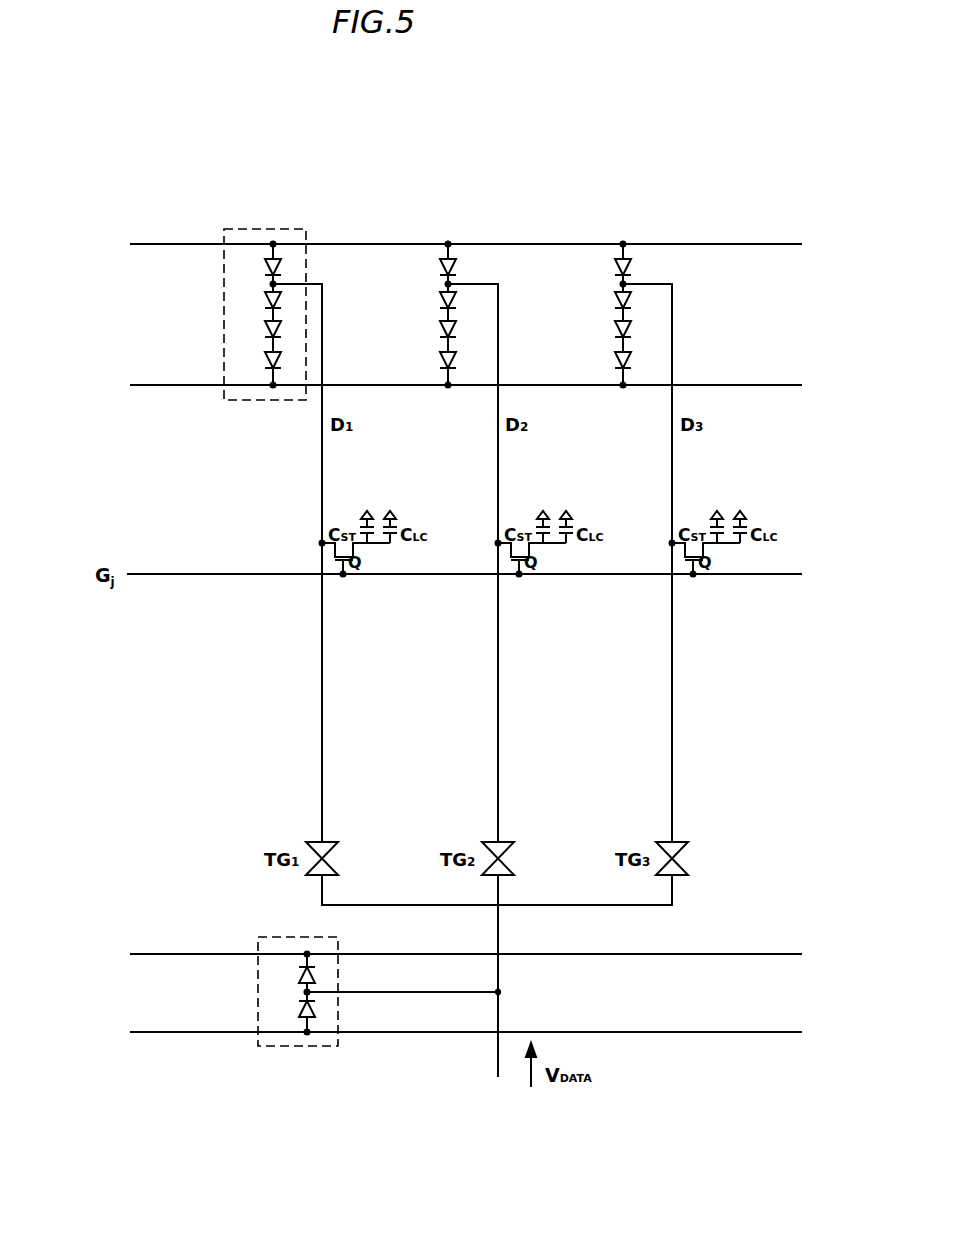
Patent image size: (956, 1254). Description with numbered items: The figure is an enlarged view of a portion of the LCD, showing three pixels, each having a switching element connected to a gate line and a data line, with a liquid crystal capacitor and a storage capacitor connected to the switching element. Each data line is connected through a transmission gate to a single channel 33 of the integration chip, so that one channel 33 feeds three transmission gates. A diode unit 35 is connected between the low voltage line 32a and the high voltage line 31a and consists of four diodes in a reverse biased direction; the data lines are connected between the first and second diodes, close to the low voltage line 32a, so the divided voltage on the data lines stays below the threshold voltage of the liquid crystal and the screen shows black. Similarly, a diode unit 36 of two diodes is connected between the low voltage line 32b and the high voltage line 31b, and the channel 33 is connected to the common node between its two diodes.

The low voltage line 32a is at (130, 244).
The high voltage line 31a is at (130, 385).
The high voltage line 31b is at (130, 954).
The low voltage line 32b is at (130, 1032).
The channel 33 is at (499, 1010).
The diode unit 35 is at (269, 229).
The diode unit 36 is at (308, 1046).